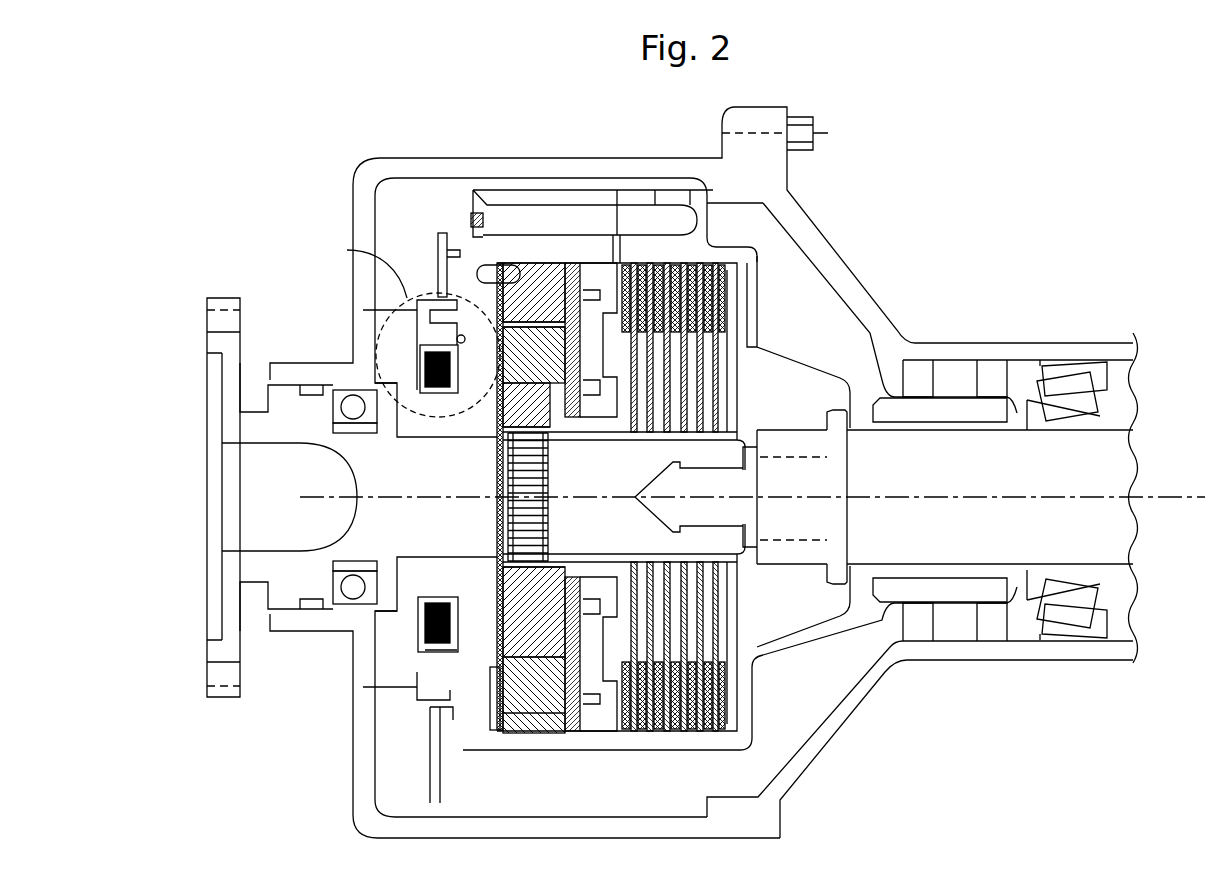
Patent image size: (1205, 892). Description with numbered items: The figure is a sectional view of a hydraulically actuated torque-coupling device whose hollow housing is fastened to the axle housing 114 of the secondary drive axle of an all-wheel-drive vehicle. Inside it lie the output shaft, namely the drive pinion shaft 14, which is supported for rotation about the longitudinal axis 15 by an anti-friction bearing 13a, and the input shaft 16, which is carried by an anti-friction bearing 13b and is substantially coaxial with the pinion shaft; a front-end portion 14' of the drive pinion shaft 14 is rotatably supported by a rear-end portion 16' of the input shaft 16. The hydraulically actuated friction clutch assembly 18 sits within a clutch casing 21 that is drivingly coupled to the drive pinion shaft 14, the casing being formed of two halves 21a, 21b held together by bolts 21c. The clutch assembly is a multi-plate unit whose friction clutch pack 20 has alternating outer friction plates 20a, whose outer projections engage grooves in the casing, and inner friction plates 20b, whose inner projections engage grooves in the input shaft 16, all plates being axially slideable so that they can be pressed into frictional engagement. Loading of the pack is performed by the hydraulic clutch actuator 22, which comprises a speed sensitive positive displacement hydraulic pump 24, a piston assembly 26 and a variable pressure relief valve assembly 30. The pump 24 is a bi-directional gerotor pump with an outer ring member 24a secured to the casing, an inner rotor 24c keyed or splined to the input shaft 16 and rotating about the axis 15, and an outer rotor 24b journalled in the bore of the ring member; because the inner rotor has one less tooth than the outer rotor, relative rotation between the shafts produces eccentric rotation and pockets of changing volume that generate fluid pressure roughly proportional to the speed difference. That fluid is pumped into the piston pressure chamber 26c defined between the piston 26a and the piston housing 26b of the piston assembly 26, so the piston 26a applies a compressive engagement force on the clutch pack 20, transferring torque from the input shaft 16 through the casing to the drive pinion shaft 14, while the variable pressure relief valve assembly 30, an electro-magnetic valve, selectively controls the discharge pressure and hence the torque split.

The anti-friction bearing 13a is at (1118, 412).
The anti-friction bearing 13b is at (318, 407).
The drive pinion shaft 14 is at (905, 497).
The front-end portion of the drive pinion shaft 14' is at (780, 495).
The longitudinal axis 15 is at (1152, 497).
The input shaft 16 is at (650, 472).
The rear-end portion of the input shaft 16' is at (716, 546).
The friction clutch assembly 18 is at (760, 288).
The friction clutch pack 20 is at (667, 522).
The outer friction plates 20a is at (633, 737).
The inner friction plates 20b is at (652, 497).
The clutch casing 21 is at (592, 184).
The clutch casing half 21a is at (654, 192).
The clutch casing half 21b is at (518, 192).
The bolts 21c is at (614, 222).
The hydraulic clutch actuator 22 is at (455, 225).
The hydraulic pump 24 is at (512, 522).
The outer ring member 24a is at (500, 735).
The outer rotor 24b is at (545, 696).
The inner rotor 24c is at (545, 622).
The piston assembly 26 is at (565, 498).
The piston 26a is at (592, 735).
The piston housing 26b is at (577, 265).
The piston pressure chamber 26c is at (568, 735).
The variable pressure relief valve assembly 30 is at (374, 322).
The axle housing 114 is at (823, 747).